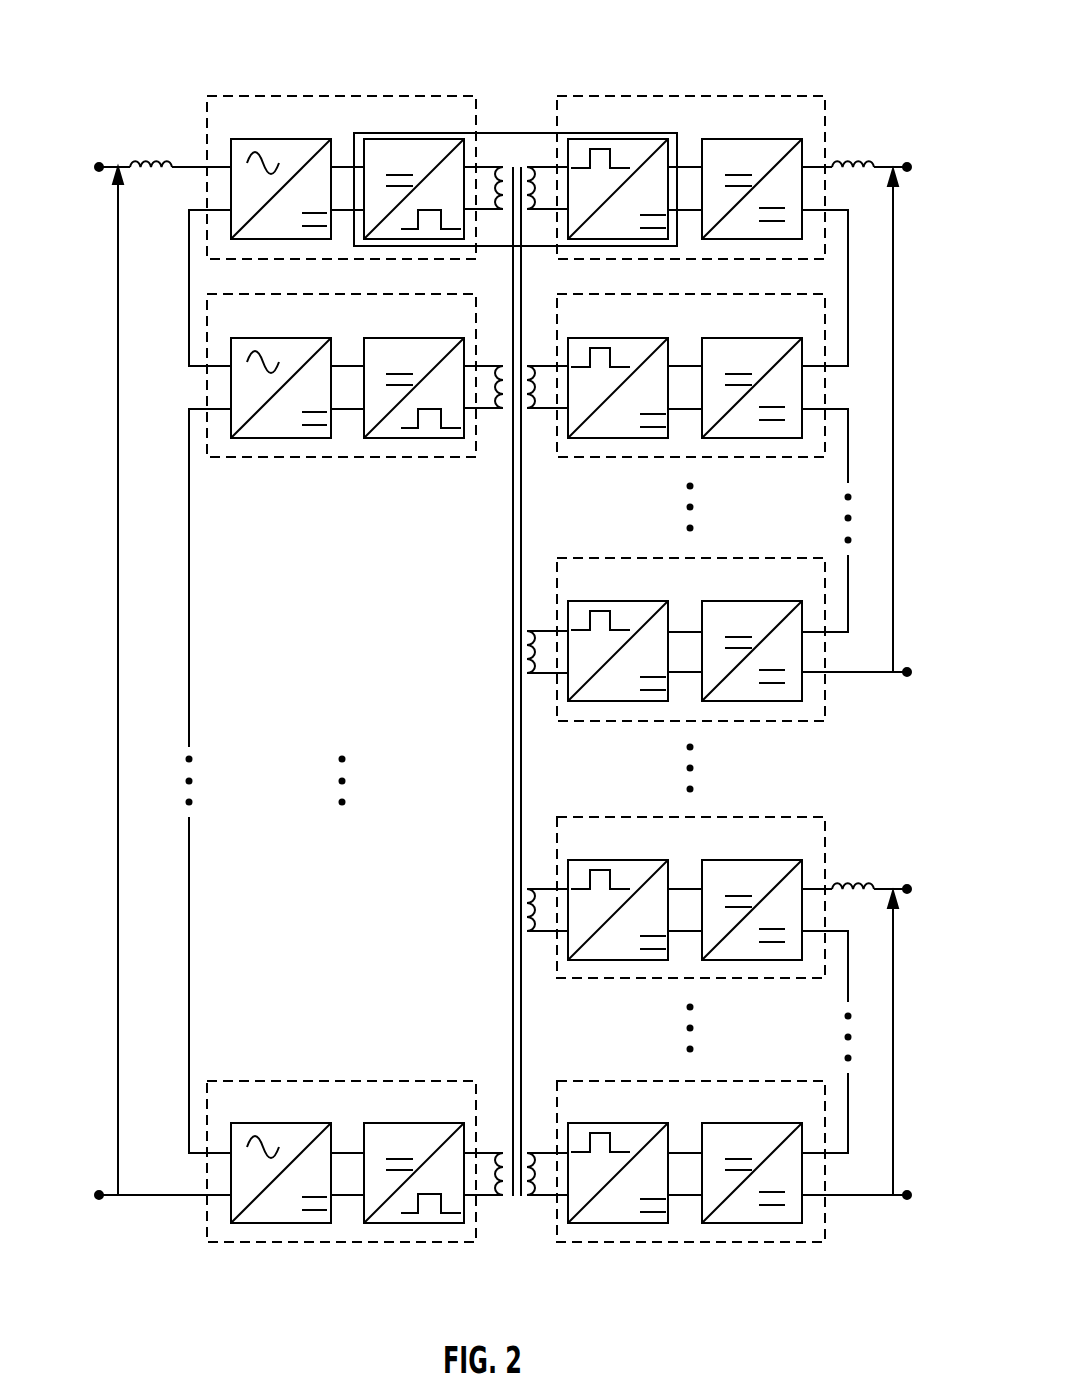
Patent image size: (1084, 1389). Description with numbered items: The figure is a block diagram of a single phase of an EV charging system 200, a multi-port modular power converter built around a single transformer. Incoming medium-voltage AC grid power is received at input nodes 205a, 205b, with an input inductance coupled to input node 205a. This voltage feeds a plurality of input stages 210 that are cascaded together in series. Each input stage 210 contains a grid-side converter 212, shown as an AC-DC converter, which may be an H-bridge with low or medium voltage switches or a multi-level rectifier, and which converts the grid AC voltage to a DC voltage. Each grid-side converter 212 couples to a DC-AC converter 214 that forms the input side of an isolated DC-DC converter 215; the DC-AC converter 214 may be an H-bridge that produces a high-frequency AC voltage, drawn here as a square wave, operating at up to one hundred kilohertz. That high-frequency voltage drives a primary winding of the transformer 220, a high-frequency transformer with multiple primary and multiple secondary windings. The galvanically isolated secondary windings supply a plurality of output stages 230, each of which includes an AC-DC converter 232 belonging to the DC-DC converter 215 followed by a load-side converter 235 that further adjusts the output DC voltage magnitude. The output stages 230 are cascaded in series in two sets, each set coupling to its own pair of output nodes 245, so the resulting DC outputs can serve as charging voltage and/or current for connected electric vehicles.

The EV charging system 200 is at (143, 30).
The input node 205a is at (100, 173).
The input node 205b is at (99, 1200).
The input stage 210 is at (341, 634).
The grid-side converter 212 is at (258, 625).
The DC-AC converter 214 is at (430, 624).
The DC-DC converter 215 is at (536, 609).
The transformer 220 is at (512, 593).
The output stage 230 is at (691, 635).
The AC-DC converter 232 is at (609, 625).
The load-side converter 235 is at (782, 673).
The output node 245 is at (923, 697).